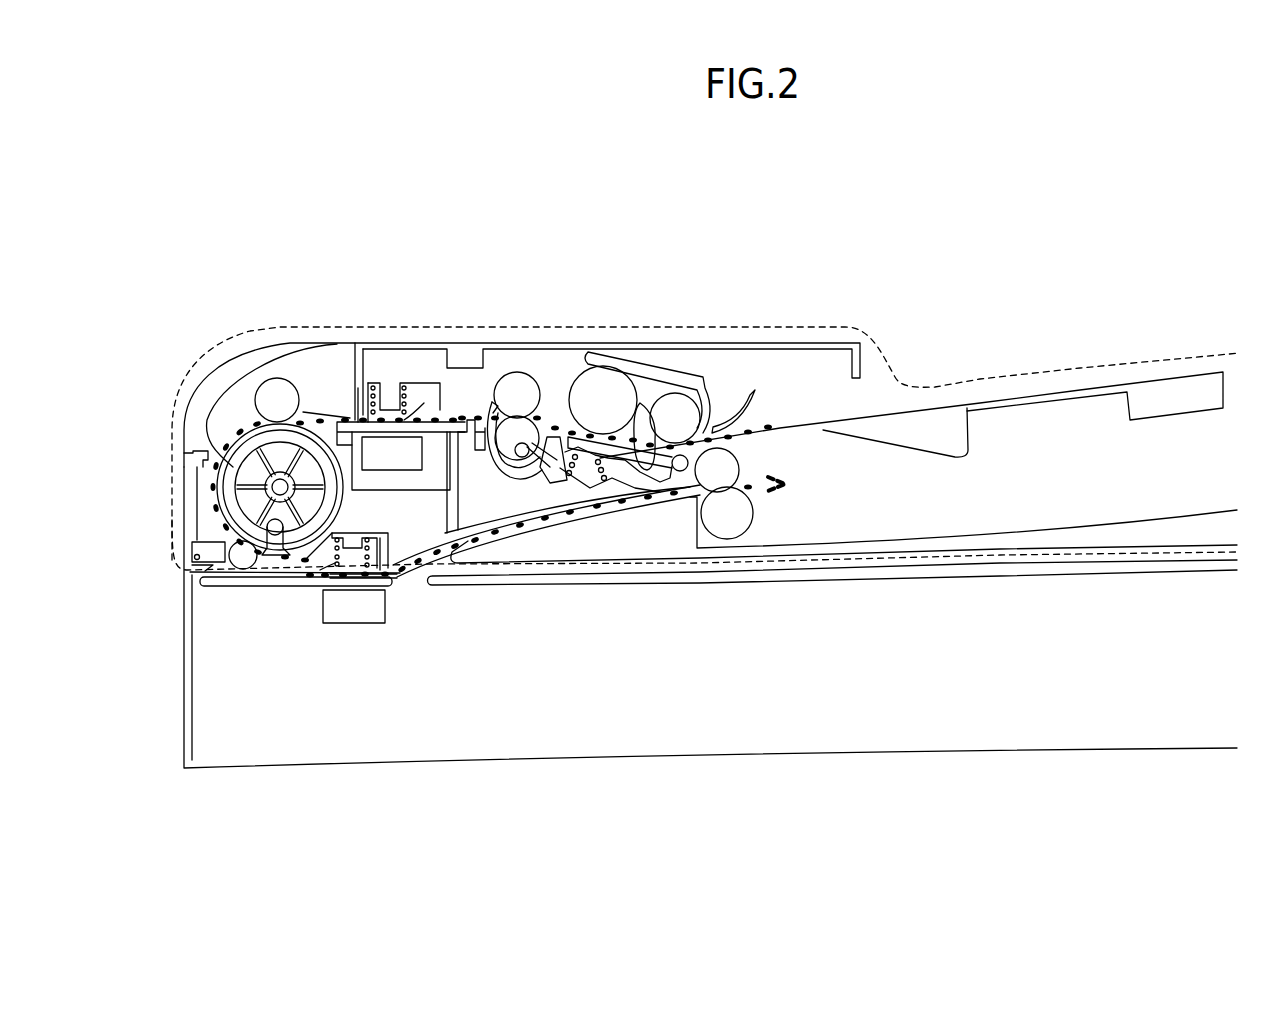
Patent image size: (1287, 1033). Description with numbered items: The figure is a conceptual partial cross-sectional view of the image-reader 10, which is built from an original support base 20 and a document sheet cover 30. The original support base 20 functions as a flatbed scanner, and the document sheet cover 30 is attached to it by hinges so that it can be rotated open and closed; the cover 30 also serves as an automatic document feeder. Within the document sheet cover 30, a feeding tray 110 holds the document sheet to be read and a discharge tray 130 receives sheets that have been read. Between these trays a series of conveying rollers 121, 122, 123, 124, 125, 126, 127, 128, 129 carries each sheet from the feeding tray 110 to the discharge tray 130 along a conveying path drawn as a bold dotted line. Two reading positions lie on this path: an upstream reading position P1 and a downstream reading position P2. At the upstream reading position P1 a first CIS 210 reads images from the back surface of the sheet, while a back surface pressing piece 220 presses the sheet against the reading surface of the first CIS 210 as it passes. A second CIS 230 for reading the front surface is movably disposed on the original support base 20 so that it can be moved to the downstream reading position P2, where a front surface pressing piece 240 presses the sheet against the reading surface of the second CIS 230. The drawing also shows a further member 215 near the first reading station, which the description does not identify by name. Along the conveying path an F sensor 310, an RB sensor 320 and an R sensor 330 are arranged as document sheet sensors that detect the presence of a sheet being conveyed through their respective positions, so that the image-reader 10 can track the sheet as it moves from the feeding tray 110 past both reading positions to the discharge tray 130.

The image-reader 10 is at (246, 265).
The original support base 20 is at (400, 745).
The document sheet cover 30 is at (757, 326).
The feeding tray 110 is at (880, 415).
The conveying roller 121 is at (677, 408).
The conveying roller 122 is at (601, 388).
The conveying roller 123 is at (514, 425).
The conveying roller 124 is at (505, 395).
The conveying roller 125 is at (268, 400).
The conveying roller 126 is at (230, 452).
The conveying roller 127 is at (243, 556).
The conveying roller 128 is at (727, 463).
The conveying roller 129 is at (738, 522).
The discharge tray 130 is at (1062, 528).
The first CIS 210 is at (367, 458).
The support member 215 is at (440, 445).
The back surface pressing piece 220 is at (392, 410).
The second CIS 230 is at (358, 610).
The front surface pressing piece 240 is at (380, 570).
The F sensor 310 is at (640, 393).
The RB sensor 320 is at (468, 408).
The R sensor 330 is at (273, 550).
The upstream reading position P1 is at (432, 442).
The downstream reading position P2 is at (317, 593).